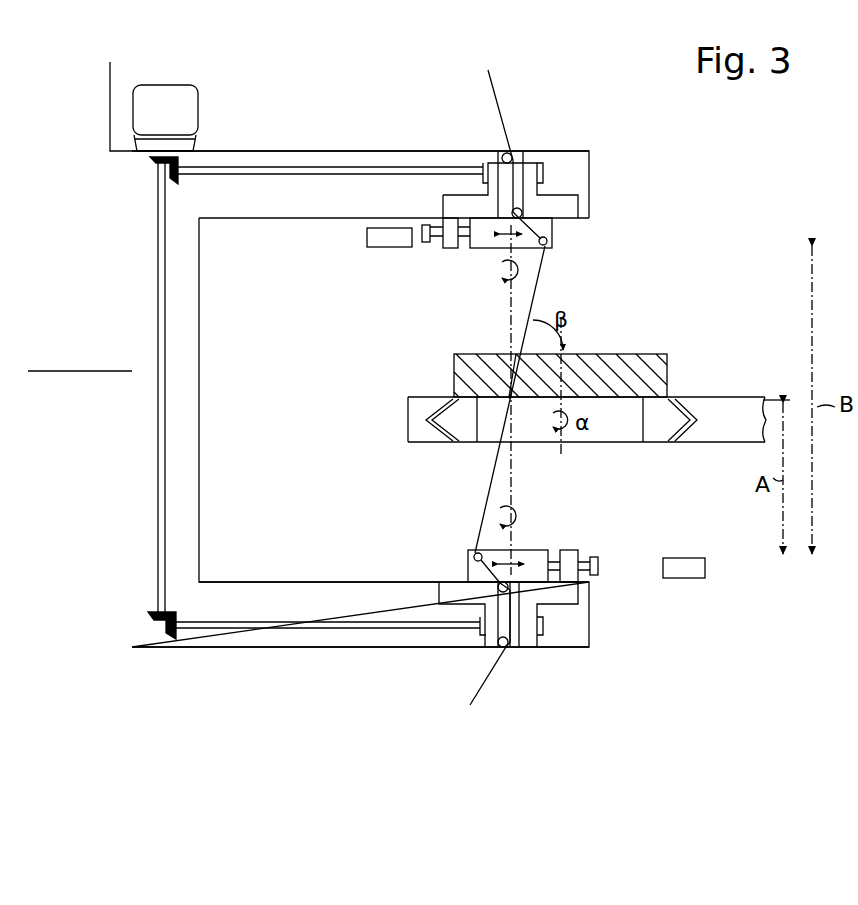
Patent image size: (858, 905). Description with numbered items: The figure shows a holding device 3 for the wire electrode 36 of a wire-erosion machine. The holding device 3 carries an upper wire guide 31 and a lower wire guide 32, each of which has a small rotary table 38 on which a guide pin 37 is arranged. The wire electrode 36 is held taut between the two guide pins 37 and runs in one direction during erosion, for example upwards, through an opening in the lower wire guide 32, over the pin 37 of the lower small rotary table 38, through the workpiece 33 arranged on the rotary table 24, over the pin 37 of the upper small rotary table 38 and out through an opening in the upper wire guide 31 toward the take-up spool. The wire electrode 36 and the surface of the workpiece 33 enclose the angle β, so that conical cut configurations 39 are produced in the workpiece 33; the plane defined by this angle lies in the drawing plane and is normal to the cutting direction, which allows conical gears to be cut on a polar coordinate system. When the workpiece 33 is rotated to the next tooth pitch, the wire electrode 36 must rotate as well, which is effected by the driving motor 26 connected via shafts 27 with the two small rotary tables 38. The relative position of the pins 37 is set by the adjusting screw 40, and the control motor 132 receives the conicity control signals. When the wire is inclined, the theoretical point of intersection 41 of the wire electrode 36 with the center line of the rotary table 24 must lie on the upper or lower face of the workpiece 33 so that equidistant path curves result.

The holding device 3 is at (80, 393).
The rotary table 24 is at (633, 441).
The driving motor 26 is at (186, 100).
The shafts 27 is at (160, 213).
The upper wire guide 31 is at (267, 152).
The lower wire guide 32 is at (275, 642).
The workpiece 33 is at (665, 367).
The wire electrode 36 is at (543, 277).
The guide pins 37 is at (550, 242).
The small rotary table 38 is at (572, 207).
The conical cut configurations 39 is at (508, 372).
The adjusting screw 40 is at (428, 243).
The theoretical point of intersection 41 is at (513, 400).
The control motor 132 is at (385, 243).